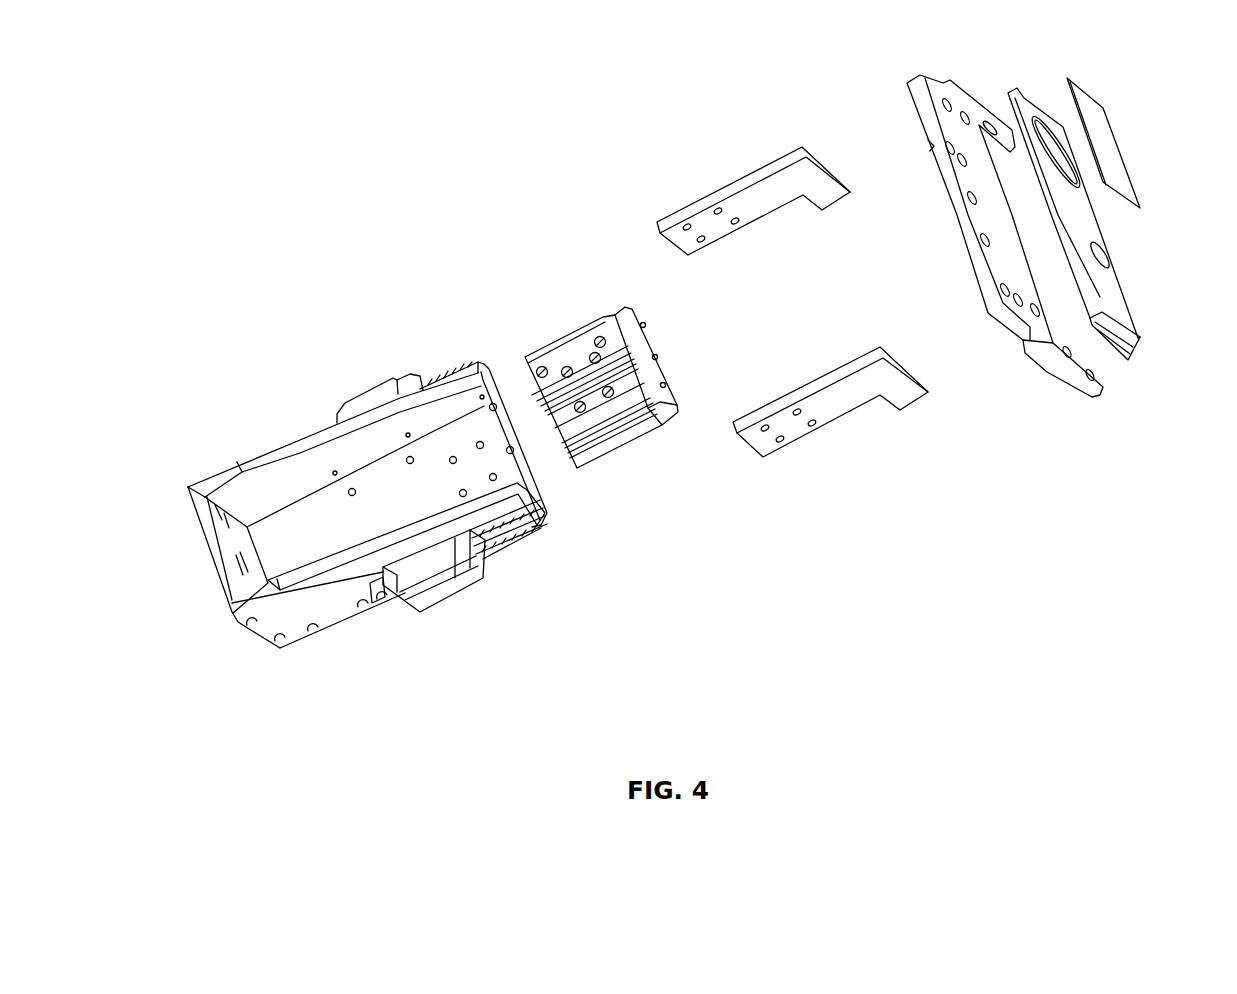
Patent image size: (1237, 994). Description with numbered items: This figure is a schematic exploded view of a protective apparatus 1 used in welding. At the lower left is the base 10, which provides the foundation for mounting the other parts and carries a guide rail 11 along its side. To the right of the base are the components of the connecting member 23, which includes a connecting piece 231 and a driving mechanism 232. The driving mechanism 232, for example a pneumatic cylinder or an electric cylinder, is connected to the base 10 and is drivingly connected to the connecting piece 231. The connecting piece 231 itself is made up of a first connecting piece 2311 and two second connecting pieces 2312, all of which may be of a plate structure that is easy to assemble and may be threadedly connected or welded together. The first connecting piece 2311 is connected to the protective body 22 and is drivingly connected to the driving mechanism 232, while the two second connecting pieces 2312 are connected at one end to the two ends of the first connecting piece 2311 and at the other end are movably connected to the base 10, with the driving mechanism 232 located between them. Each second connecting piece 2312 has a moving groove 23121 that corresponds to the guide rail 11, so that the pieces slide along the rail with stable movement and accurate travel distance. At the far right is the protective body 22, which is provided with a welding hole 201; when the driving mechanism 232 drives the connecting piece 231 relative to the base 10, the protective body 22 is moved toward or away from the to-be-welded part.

The linear actuator assembly 1 is at (249, 104).
The base 10 is at (346, 648).
The guide rail 11 is at (540, 523).
The protective body 22 is at (1130, 360).
The welding hole 201 is at (1110, 263).
The connecting member 23 is at (1156, 521).
The connecting piece 231 is at (1046, 510).
The first connecting piece 2311 is at (1062, 383).
The second connecting piece 2312 is at (765, 203).
The moving groove 23121 is at (487, 560).
The driving mechanism 232 is at (668, 422).